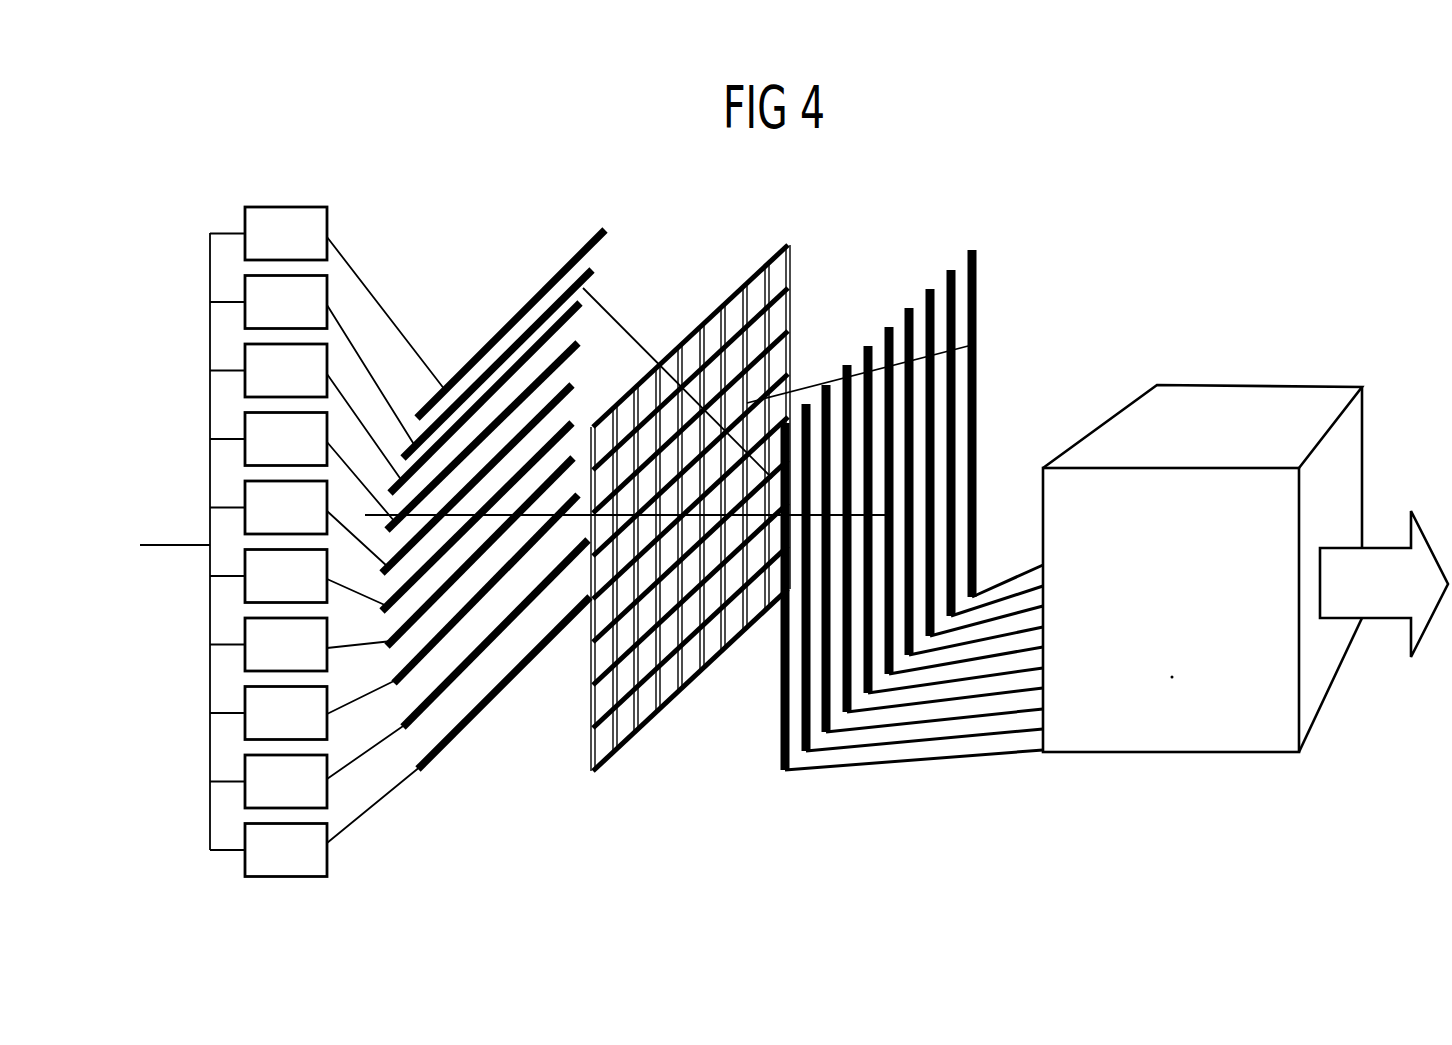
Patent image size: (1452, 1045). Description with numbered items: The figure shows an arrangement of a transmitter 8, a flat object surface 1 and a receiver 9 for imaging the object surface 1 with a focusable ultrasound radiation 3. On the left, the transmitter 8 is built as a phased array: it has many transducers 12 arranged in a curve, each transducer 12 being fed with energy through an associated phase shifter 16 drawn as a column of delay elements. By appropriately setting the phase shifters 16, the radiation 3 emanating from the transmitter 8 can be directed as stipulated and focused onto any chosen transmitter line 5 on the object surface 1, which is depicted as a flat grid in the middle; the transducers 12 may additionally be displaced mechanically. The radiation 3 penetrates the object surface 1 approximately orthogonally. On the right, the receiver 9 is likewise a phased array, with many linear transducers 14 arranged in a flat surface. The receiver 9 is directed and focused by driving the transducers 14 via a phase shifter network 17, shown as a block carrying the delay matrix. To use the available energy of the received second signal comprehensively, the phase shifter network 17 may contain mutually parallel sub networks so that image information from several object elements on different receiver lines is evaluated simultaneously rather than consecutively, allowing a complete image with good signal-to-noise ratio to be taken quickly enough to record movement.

The object surface 1 is at (708, 280).
The radiation 3 is at (623, 314).
The transmitter line 5 is at (778, 250).
The transmitter 8 is at (600, 149).
The receiver 9 is at (998, 172).
The transducers 12 is at (541, 291).
The linear transducers 14 is at (865, 338).
The phase shifters 16 is at (243, 592).
The phase shifter network 17 is at (1154, 753).